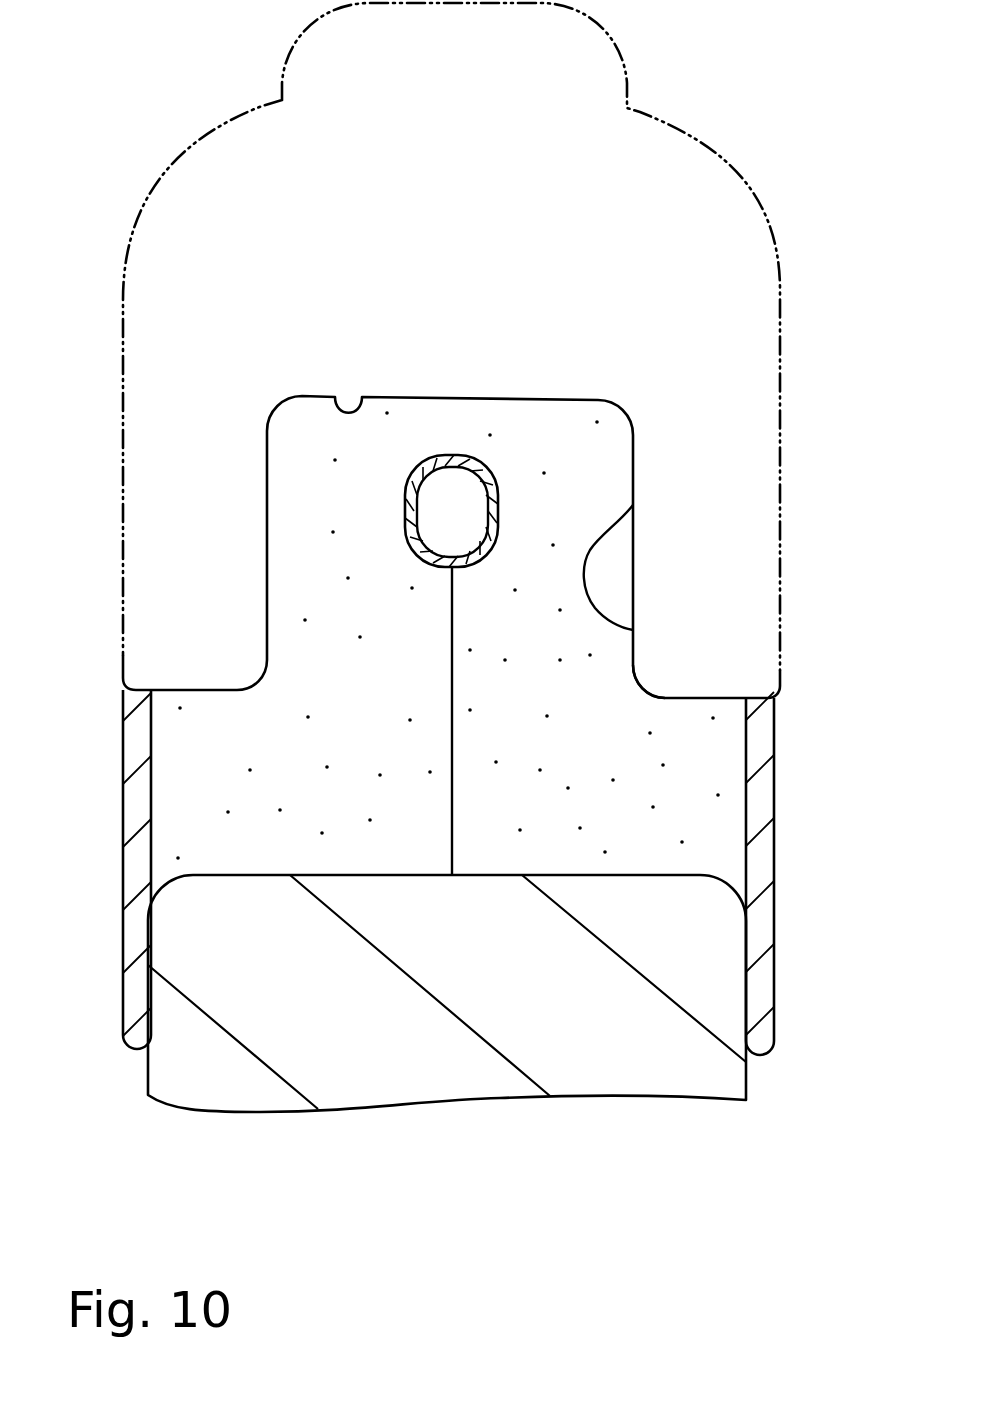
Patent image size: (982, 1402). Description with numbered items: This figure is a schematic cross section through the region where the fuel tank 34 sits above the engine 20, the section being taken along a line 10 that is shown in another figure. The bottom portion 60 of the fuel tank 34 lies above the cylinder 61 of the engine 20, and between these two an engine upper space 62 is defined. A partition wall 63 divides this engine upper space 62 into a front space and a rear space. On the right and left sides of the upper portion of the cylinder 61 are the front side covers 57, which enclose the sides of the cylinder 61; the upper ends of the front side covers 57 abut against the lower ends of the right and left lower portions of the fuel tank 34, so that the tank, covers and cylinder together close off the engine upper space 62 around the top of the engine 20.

The ring / tubular member 10 is at (408, 502).
The engine 20 is at (173, 1119).
The fuel tank 34 is at (780, 514).
The front side covers 57 is at (122, 862).
The bottom portion 60 is at (339, 410).
The cylinder 61 is at (718, 928).
The engine upper space 62 is at (612, 565).
The partition wall 63 is at (618, 712).